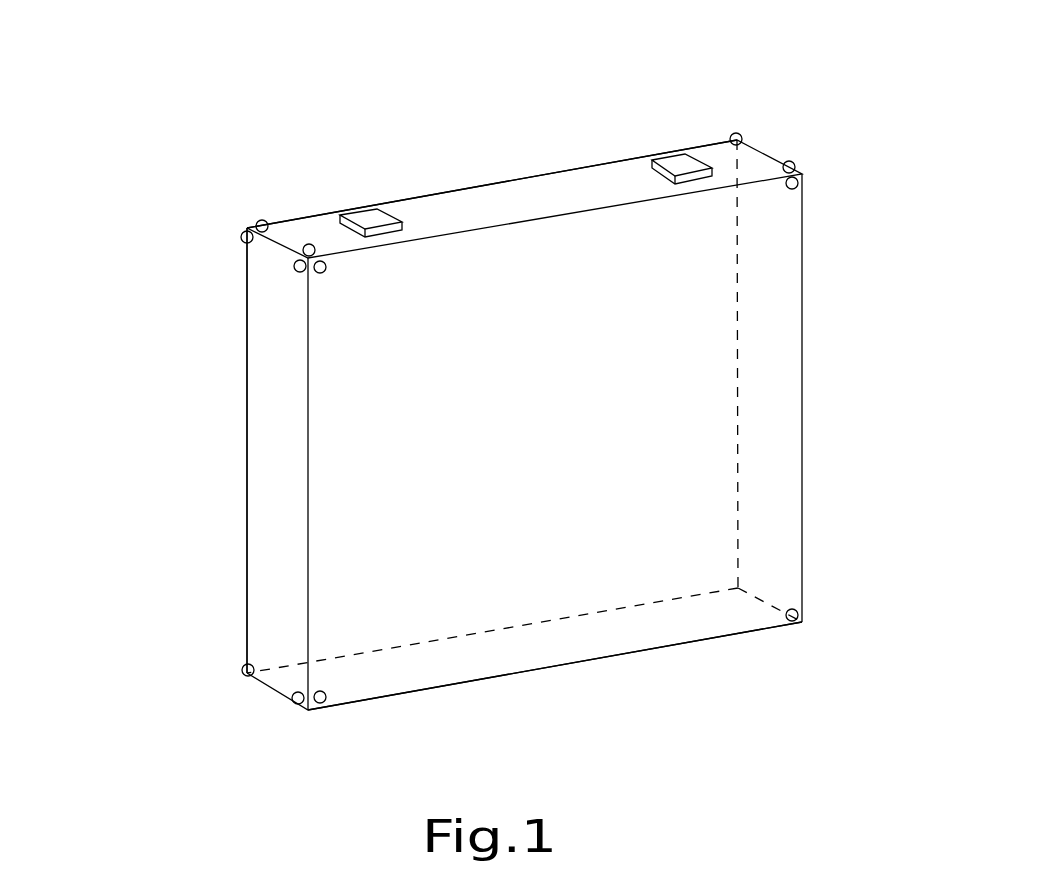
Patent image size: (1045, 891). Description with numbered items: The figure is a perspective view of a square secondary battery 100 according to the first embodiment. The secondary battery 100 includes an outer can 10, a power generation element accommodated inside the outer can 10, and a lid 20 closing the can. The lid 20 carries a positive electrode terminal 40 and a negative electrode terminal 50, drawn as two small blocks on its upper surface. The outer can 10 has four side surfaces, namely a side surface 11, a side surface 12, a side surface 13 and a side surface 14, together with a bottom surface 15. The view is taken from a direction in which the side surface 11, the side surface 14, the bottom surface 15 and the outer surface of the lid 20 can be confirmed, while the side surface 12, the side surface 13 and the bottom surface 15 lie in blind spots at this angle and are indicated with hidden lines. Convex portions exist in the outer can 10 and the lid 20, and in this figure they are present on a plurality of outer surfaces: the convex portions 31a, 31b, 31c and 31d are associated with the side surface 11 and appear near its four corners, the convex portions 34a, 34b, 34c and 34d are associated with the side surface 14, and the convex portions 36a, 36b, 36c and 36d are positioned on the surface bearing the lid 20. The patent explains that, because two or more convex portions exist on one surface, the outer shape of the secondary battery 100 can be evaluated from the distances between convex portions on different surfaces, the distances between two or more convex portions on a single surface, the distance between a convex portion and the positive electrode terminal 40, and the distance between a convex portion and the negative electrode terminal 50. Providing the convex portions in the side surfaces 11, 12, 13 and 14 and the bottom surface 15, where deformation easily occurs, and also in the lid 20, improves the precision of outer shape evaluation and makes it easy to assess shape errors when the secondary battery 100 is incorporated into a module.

The secondary battery 100 is at (94, 97).
The outer can 10 is at (812, 408).
The side surface 11 is at (698, 318).
The side surface 12 is at (570, 240).
The side surface 13 is at (768, 522).
The side surface 14 is at (273, 507).
The bottom surface 15 is at (595, 630).
The lid 20 is at (470, 178).
The positive electrode terminal 40 is at (365, 215).
The negative electrode terminal 50 is at (678, 163).
The convex portion 31a is at (320, 274).
The convex portion 31b is at (798, 188).
The convex portion 31c is at (324, 703).
The convex portion 31d is at (800, 621).
The convex portion 34a is at (244, 243).
The convex portion 34b is at (298, 272).
The convex portion 34c is at (246, 676).
The convex portion 34d is at (296, 704).
The convex portion 36a is at (262, 220).
The convex portion 36b is at (309, 244).
The convex portion 36c is at (737, 133).
The convex portion 36d is at (789, 161).